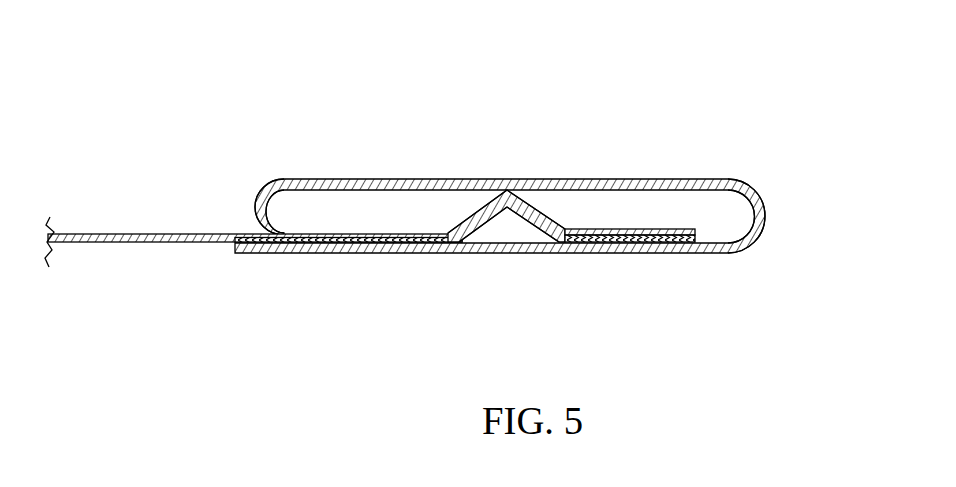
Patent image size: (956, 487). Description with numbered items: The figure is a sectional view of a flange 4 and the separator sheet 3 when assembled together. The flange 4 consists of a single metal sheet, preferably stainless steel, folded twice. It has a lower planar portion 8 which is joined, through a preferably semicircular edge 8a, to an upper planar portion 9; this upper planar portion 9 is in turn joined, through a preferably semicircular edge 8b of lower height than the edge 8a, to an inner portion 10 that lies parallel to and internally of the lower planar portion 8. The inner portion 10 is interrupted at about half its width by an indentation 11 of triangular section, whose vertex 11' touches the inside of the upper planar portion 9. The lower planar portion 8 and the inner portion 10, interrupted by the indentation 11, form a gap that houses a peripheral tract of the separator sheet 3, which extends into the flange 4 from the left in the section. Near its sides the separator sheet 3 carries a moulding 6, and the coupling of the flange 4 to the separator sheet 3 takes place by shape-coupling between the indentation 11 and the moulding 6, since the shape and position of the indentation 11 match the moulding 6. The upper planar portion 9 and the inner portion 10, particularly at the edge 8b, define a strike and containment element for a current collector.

The separator sheet 3 is at (138, 242).
The flange 4 is at (632, 156).
The moulding 6 is at (522, 232).
The lower planar portion 8 is at (418, 254).
The semicircular edge 8a is at (766, 211).
The semicircular edge 8b is at (253, 199).
The upper planar portion 9 is at (500, 191).
The inner portion 10 is at (318, 241).
The indentation 11 is at (469, 164).
The vertex 11' is at (552, 158).